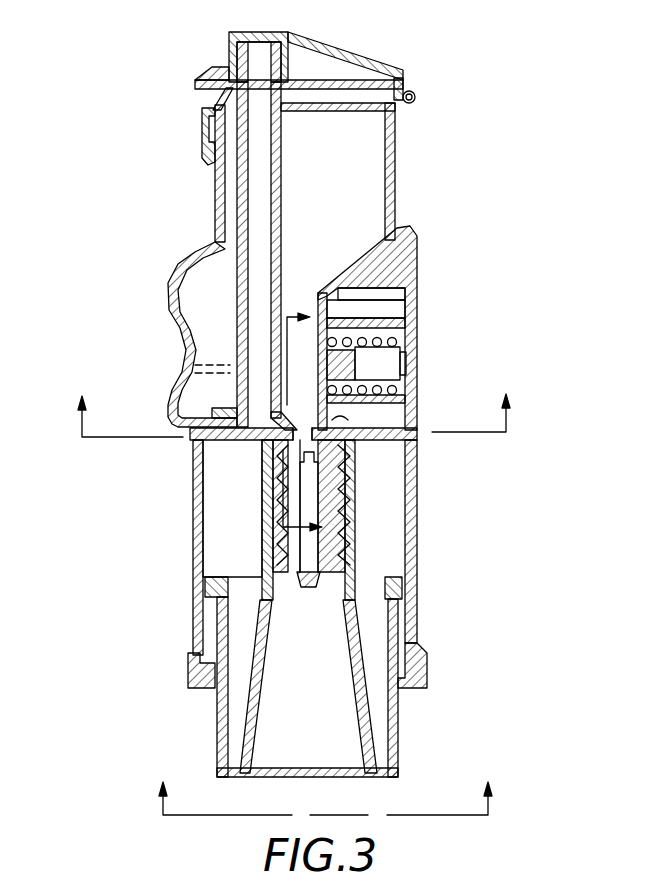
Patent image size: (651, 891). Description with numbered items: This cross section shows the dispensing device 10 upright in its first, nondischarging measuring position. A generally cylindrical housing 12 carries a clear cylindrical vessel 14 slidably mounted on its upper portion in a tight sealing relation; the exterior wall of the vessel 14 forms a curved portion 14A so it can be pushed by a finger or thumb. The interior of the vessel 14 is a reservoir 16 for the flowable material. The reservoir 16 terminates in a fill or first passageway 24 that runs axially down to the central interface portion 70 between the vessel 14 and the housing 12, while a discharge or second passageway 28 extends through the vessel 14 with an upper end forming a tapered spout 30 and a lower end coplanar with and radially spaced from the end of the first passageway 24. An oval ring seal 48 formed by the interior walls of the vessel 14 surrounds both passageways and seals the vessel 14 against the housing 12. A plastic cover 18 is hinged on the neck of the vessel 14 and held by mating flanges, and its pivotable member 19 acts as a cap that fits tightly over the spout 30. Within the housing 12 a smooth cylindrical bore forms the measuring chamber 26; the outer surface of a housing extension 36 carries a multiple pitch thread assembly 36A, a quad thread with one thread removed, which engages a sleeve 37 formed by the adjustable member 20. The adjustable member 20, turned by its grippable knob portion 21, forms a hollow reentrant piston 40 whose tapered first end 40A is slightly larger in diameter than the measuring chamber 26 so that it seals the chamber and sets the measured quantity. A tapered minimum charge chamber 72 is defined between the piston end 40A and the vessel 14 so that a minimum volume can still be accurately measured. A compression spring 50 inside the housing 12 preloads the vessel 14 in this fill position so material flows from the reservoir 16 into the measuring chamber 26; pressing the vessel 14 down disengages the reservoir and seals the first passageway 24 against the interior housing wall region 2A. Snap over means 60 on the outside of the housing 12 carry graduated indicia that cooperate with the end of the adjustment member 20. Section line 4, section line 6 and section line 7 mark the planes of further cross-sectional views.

The device 10 is at (505, 462).
The housing 12 is at (417, 572).
The vessel 14 is at (395, 178).
The curved portion 14A is at (168, 282).
The reservoir 16 is at (228, 162).
The cover 18 is at (388, 58).
The pivotable member 19 is at (410, 88).
The adjustable member 20 is at (212, 715).
The grippable knob portion 21 is at (400, 745).
The first passageway 24 is at (303, 385).
The measuring chamber 26 is at (337, 460).
The second passageway 28 is at (243, 203).
The tapered spout 30 is at (243, 50).
The extension 36 is at (340, 508).
The multiple pitch thread assembly 36A is at (309, 467).
The sleeve 37 is at (343, 564).
The piston 40 is at (305, 565).
The first end of piston 40A is at (290, 500).
The oval ring seal 48 is at (190, 412).
The compression spring 50 is at (365, 338).
The snap over means 60 is at (425, 698).
The central interface portion 70 is at (380, 414).
The minimum charge chamber 72 is at (300, 412).
The annular chamber 2A is at (238, 455).
The section line 4- 4 is at (323, 807).
The section line 6- 6 is at (280, 407).
The section line 7- 7 is at (302, 426).